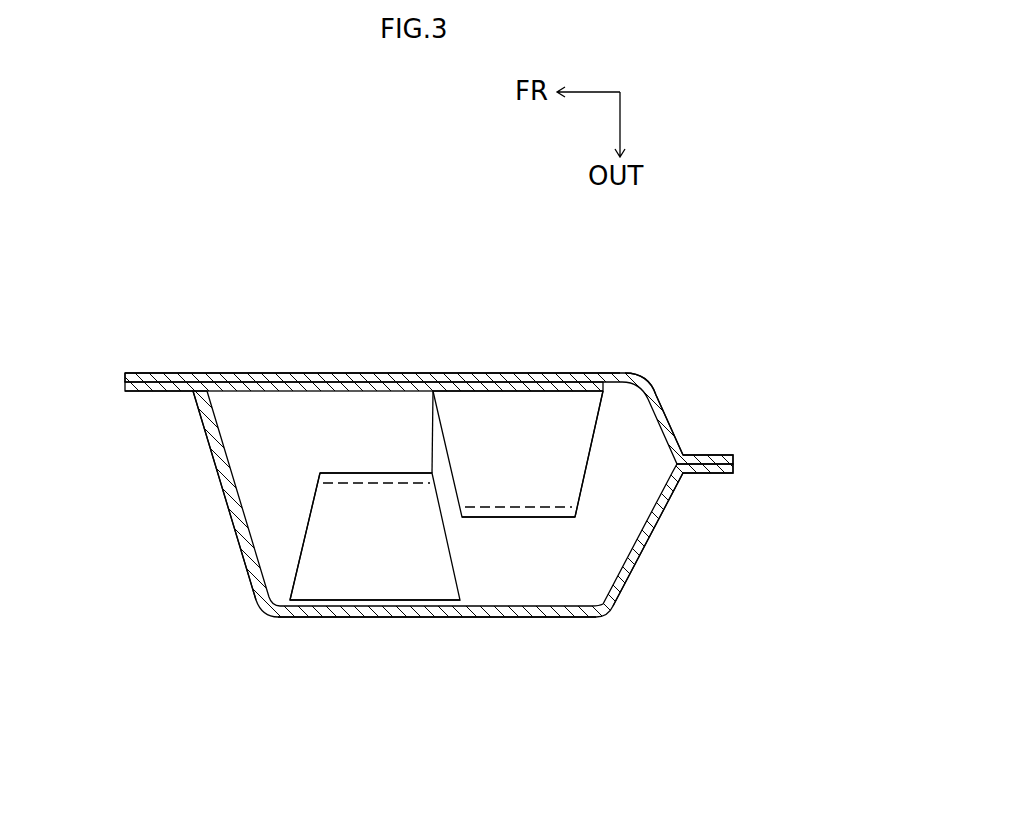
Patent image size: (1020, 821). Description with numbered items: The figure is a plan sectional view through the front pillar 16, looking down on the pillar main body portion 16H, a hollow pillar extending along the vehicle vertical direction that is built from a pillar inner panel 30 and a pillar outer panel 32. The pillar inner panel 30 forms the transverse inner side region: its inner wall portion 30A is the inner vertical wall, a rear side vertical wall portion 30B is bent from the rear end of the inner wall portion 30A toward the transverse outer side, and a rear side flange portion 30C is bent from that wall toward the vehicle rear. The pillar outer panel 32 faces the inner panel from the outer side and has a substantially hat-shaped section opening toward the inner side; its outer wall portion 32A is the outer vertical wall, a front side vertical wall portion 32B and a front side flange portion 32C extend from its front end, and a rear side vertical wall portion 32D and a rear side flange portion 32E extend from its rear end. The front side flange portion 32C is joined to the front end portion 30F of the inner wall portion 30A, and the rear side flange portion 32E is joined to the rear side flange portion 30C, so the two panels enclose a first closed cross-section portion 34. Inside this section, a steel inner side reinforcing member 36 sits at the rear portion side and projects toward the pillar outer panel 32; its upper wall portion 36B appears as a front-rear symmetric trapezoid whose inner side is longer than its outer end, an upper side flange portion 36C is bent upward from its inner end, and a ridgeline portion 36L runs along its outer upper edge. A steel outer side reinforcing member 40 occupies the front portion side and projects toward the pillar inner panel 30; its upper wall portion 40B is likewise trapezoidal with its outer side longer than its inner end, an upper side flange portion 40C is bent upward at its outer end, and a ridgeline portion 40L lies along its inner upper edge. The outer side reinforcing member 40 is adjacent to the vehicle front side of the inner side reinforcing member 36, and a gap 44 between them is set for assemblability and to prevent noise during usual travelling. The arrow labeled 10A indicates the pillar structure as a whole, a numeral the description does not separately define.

The vehicle lower structure 10A is at (248, 718).
The front pillar 16 is at (450, 262).
The pillar main body portion 16H is at (408, 305).
The pillar inner panel 30 is at (372, 349).
The inner wall portion 30A is at (298, 373).
The rear side vertical wall portion 30B is at (667, 413).
The rear side flange portion 30C is at (713, 455).
The front end portion 30F is at (155, 373).
The pillar outer panel 32 is at (602, 636).
The outer wall portion 32A is at (505, 618).
The front side vertical wall portion 32B is at (215, 478).
The front side flange portion 32C is at (160, 393).
The rear side vertical wall portion 32D is at (657, 527).
The rear side flange portion 32E is at (715, 477).
The first closed cross-section portion 34 is at (377, 438).
The inner side reinforcing member 36 is at (525, 535).
The upper wall portion 36B is at (570, 450).
The upper side flange portion 36C is at (513, 393).
The ridgeline portion 36L is at (543, 517).
The outer side reinforcing member 40 is at (328, 449).
The upper wall portion 40B is at (335, 532).
The upper side flange portion 40C is at (378, 600).
The ridgeline portion 40L is at (327, 470).
The gap 44 is at (447, 485).